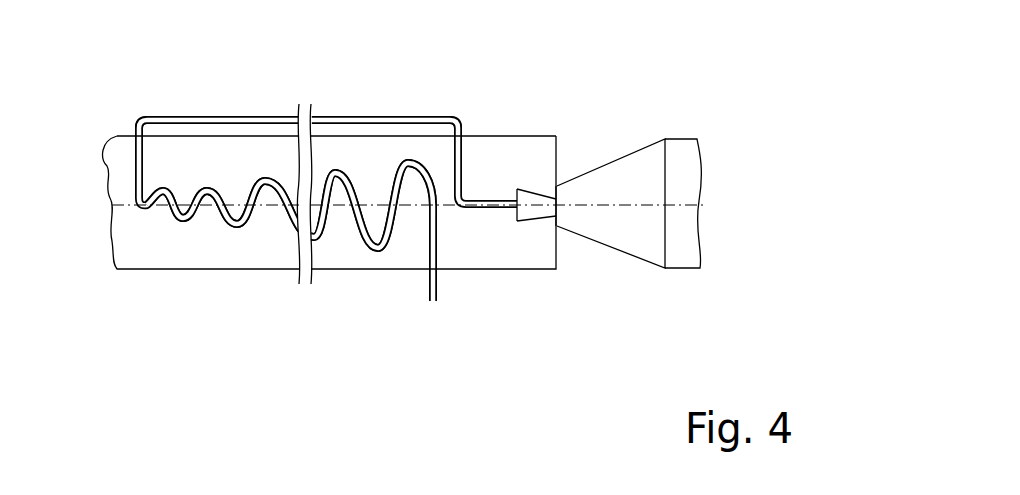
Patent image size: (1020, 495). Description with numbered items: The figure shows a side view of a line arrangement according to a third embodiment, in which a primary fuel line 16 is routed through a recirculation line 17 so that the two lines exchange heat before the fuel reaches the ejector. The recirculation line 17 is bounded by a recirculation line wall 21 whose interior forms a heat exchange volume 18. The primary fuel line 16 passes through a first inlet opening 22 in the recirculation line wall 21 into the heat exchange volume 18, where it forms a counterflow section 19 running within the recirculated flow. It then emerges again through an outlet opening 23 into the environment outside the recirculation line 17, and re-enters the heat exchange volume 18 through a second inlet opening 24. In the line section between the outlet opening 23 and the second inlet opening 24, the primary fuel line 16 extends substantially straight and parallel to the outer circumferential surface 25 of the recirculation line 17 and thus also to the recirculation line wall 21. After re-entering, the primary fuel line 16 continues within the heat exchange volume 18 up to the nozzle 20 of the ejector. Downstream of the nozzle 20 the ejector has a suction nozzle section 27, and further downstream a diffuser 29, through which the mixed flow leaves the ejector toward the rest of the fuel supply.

The primary fuel line 16 is at (210, 103).
The recirculation line 17 is at (536, 126).
The heat exchange volume 18 is at (259, 259).
The counterflow section 19 is at (407, 146).
The nozzle 20 is at (536, 240).
The recirculation line wall 21 is at (340, 270).
The first inlet opening 22 is at (446, 283).
The outlet opening 23 is at (124, 115).
The second inlet opening 24 is at (470, 121).
The outer circumferential surface 25 is at (188, 273).
The suction nozzle section 27 is at (560, 230).
The diffuser 29 is at (613, 133).